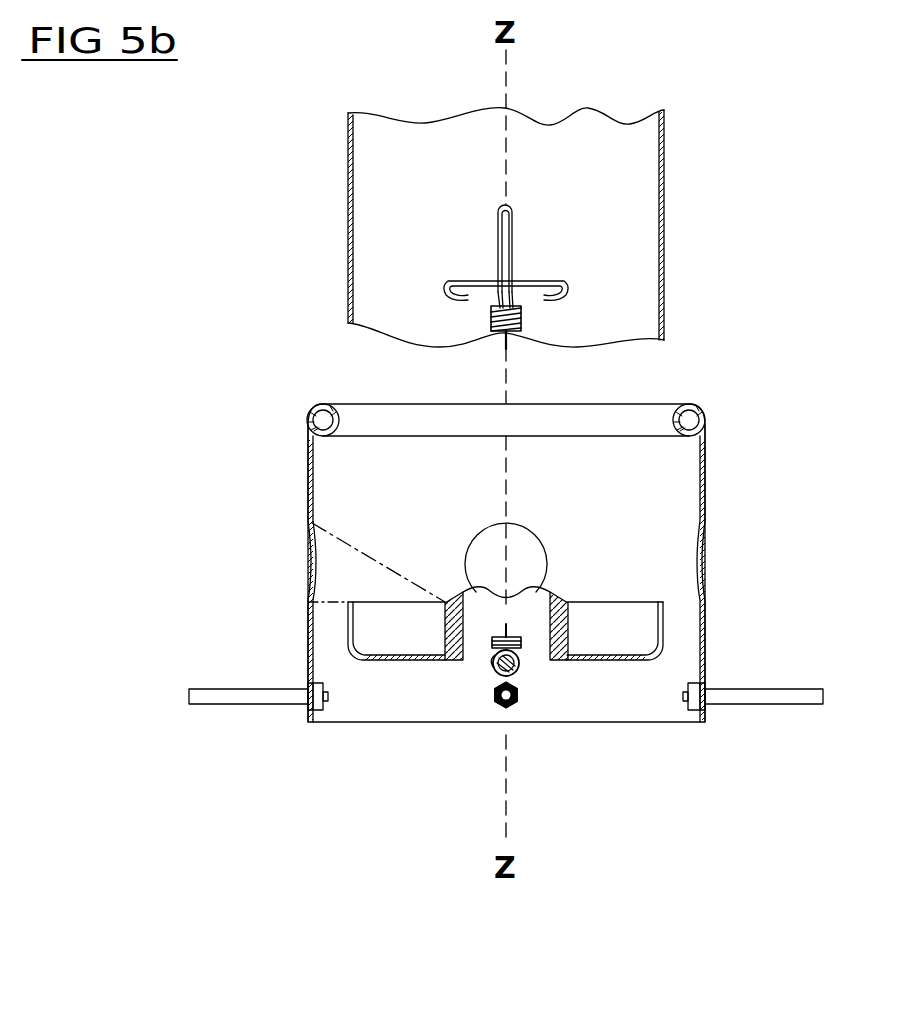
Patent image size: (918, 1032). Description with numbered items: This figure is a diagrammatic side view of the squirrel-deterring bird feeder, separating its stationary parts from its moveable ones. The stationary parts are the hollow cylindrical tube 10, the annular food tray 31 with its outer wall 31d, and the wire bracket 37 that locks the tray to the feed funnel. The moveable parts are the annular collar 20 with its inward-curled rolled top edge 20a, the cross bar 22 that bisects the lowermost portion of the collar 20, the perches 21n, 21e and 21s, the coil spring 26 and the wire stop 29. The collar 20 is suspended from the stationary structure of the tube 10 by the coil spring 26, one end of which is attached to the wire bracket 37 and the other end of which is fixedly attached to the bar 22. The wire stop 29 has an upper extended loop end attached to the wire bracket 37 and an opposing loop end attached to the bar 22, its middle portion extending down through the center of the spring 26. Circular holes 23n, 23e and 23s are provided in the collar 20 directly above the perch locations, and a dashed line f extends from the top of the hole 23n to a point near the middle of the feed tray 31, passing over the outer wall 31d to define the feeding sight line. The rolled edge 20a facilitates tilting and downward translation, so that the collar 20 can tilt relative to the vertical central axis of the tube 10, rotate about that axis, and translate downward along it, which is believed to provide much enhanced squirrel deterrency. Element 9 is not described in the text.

The cylindrical tube 10 is at (673, 193).
The wire stop 29 is at (500, 197).
The wire bracket 37 is at (570, 278).
The coil spring 26 is at (528, 320).
The collar 20 is at (533, 547).
The rolled top edge 20a is at (674, 413).
The hole 23n is at (310, 560).
The hole 23s is at (704, 536).
The hole 23e is at (510, 523).
The dashed-line f is at (353, 547).
The reference plane 9 is at (324, 603).
The food tray 31 is at (510, 615).
The outer wall 31d is at (356, 594).
The cross bar 22 is at (517, 677).
The perch 21e is at (487, 704).
The perch 21n is at (262, 713).
The perch 21s is at (762, 712).